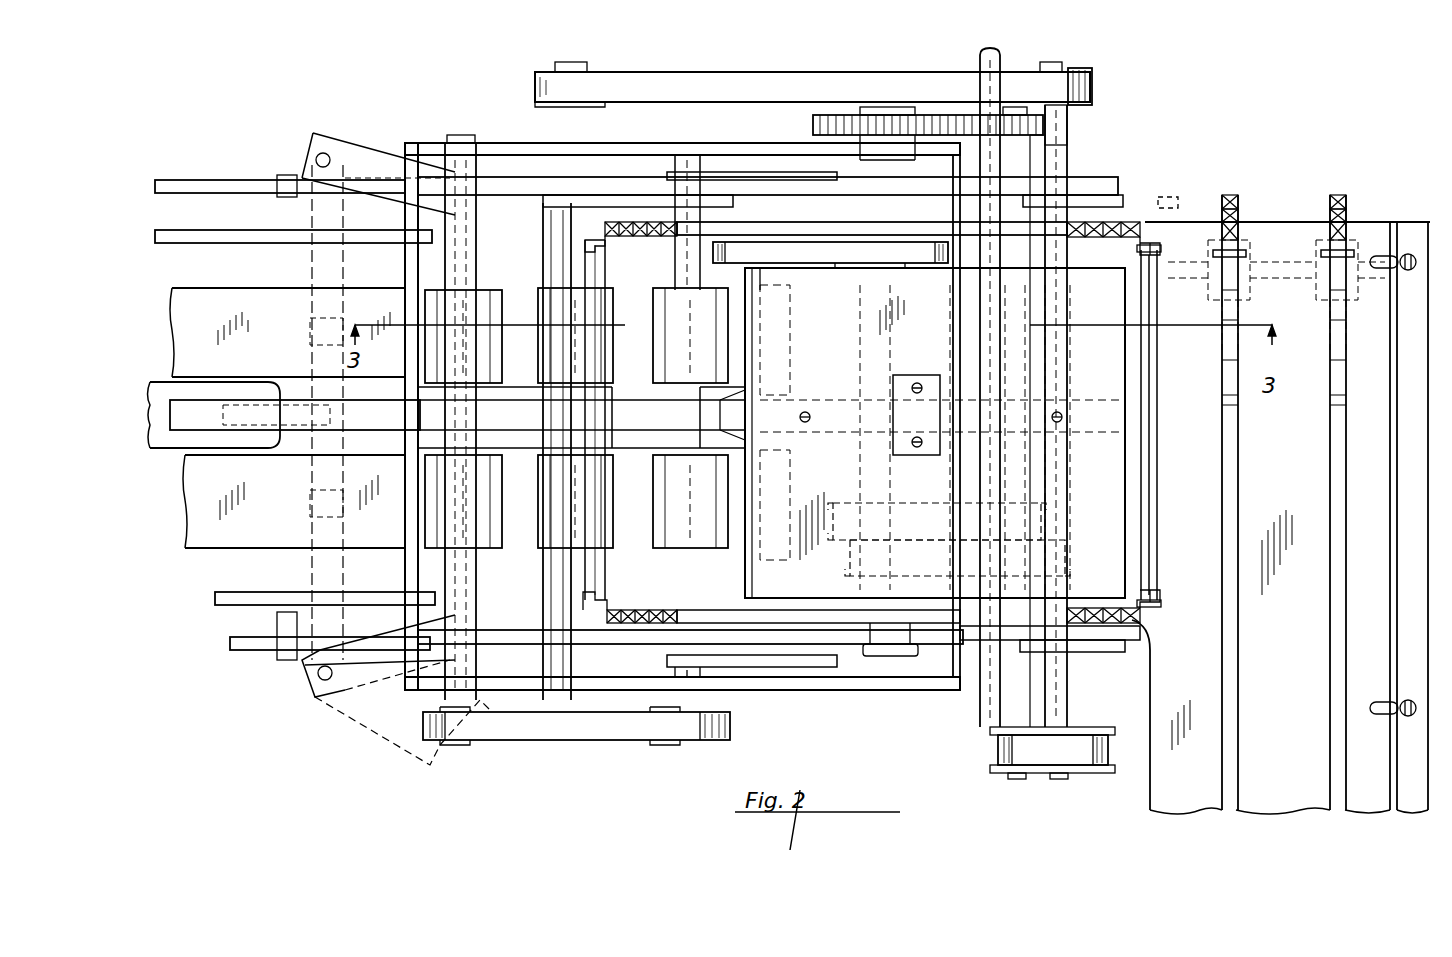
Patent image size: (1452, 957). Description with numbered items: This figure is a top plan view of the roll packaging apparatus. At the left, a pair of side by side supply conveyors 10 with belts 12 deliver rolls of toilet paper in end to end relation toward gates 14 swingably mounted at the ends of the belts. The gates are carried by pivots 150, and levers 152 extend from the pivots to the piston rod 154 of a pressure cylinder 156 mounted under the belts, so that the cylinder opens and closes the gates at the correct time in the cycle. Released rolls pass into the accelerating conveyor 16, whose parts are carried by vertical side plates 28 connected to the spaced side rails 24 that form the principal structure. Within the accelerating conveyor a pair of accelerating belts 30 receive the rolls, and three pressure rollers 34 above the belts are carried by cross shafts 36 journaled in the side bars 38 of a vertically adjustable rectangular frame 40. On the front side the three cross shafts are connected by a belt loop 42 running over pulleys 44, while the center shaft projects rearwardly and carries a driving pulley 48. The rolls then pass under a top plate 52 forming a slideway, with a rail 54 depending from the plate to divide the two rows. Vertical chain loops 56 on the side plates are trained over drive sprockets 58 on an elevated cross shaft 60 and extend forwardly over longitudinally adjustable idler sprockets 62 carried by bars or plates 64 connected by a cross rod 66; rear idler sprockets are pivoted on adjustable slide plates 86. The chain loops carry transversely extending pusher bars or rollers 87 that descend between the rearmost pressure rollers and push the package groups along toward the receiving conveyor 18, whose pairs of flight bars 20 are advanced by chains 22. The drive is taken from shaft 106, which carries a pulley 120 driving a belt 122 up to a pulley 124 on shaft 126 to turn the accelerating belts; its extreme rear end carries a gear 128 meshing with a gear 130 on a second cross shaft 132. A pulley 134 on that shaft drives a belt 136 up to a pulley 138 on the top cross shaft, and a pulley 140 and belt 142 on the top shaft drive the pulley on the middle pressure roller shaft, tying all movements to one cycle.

The supply conveyors 10 is at (200, 255).
The belts 12 is at (185, 331).
The gates 14 is at (362, 165).
The accelerating conveyor 16 is at (522, 133).
The receiving conveyor 18 is at (1362, 215).
The flight bars 20 is at (1335, 258).
The chains 22 is at (1340, 200).
The side rails 24 is at (230, 187).
The vertical side plates 28 is at (778, 190).
The accelerating belts 30 is at (631, 470).
The pressure rollers 34 is at (482, 536).
The cross shafts 36 is at (585, 130).
The side bars 38 is at (852, 685).
The rectangular frame 40 is at (730, 148).
The belt loop 42 is at (490, 742).
The pulleys 44 is at (660, 742).
The driving pulley 48 is at (620, 62).
The top plate 52 is at (831, 375).
The rail 54 is at (835, 436).
The chain loop 56 is at (1075, 238).
The drive sprockets 58 is at (1100, 220).
The elevated cross shaft 60 is at (1063, 128).
The idler sprockets 62 is at (633, 236).
The bars or plates 64 is at (643, 208).
The cross rod 66 is at (542, 240).
The slide plates 86 is at (1095, 193).
The pusher bars or rollers 87 is at (598, 354).
The shaft 106 is at (895, 660).
The pulley 120 is at (852, 270).
The belt 122 is at (805, 240).
The pulley 124 is at (782, 285).
The shaft 126 is at (755, 633).
The gear 128 is at (847, 118).
The gear 130 is at (993, 120).
The second cross shaft 132 is at (1022, 160).
The pulley 134 is at (992, 755).
The belt 136 is at (1040, 748).
The pulley 138 is at (1090, 760).
The pulley 140 is at (1088, 72).
The belt 142 is at (712, 80).
The pivots 150 is at (323, 152).
The levers 152 is at (315, 276).
The piston rod 154 is at (300, 405).
The pressure cylinder 156 is at (172, 443).